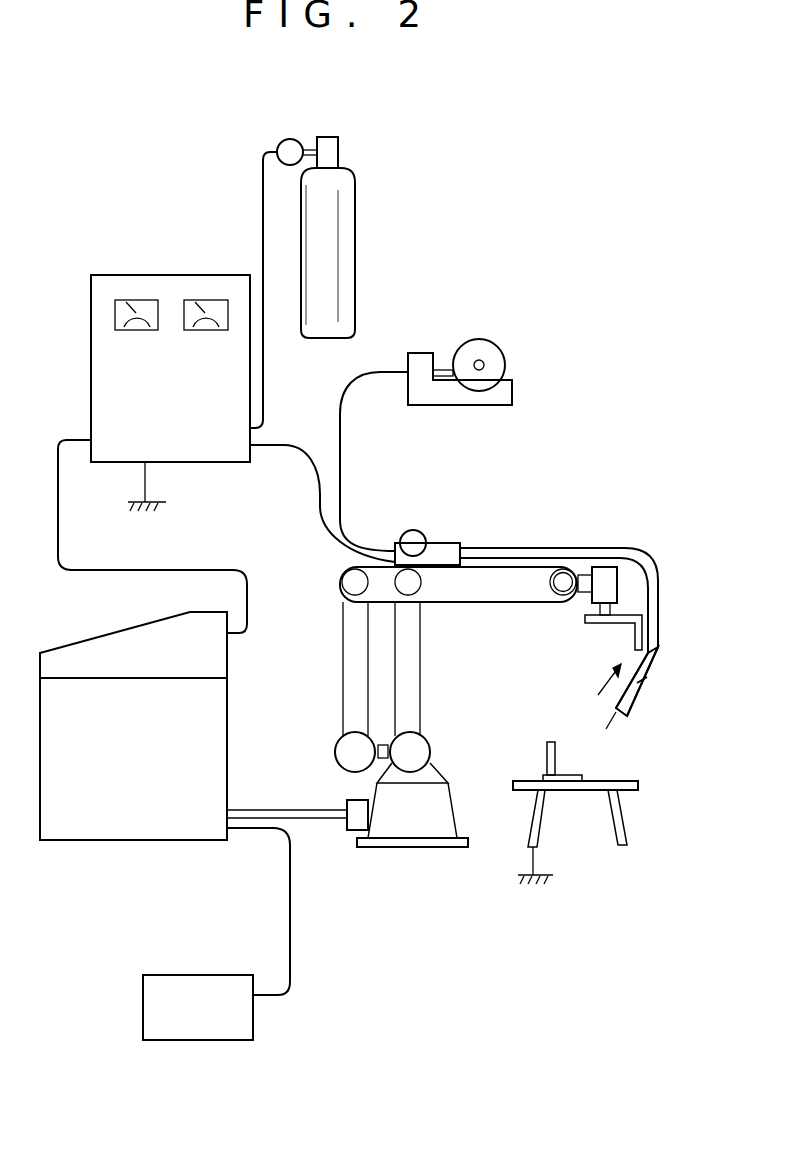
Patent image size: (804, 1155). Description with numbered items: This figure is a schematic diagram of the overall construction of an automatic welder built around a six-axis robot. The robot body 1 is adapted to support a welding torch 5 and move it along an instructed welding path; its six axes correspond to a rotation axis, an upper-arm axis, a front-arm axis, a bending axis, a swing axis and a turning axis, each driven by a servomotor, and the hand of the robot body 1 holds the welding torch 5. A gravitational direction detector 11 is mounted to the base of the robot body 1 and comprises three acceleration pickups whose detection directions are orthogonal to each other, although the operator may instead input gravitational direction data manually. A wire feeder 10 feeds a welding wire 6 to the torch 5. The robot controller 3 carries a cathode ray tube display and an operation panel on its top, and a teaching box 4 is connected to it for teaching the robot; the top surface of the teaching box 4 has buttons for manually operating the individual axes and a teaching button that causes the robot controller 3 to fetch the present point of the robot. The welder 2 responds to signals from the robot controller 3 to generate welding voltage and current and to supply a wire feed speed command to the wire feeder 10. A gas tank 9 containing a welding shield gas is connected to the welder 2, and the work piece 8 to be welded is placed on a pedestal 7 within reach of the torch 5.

The robot body 1 is at (452, 797).
The welder 2 is at (91, 383).
The robot controller 3 is at (55, 840).
The teaching box 4 is at (143, 1008).
The welding torch 5 is at (643, 693).
The welding wire 6 is at (512, 392).
The pedestal 7 is at (638, 786).
The work piece 8 is at (547, 753).
The gas tank 9 is at (355, 287).
The wire feeder 10 is at (443, 542).
The gravitational direction detector 11 is at (350, 832).